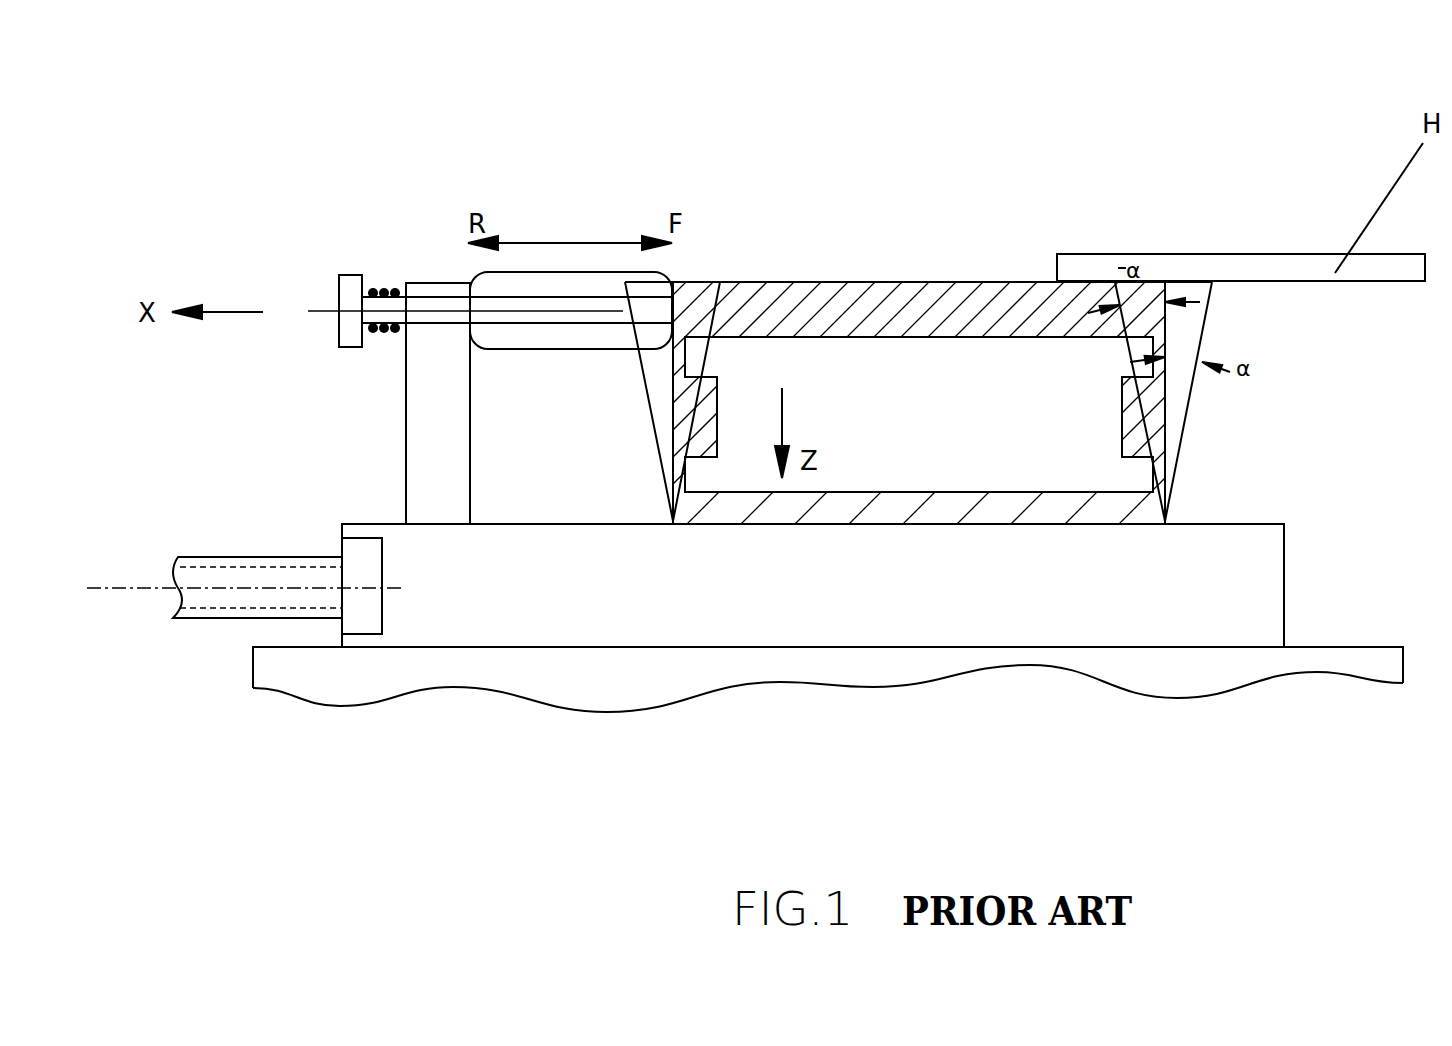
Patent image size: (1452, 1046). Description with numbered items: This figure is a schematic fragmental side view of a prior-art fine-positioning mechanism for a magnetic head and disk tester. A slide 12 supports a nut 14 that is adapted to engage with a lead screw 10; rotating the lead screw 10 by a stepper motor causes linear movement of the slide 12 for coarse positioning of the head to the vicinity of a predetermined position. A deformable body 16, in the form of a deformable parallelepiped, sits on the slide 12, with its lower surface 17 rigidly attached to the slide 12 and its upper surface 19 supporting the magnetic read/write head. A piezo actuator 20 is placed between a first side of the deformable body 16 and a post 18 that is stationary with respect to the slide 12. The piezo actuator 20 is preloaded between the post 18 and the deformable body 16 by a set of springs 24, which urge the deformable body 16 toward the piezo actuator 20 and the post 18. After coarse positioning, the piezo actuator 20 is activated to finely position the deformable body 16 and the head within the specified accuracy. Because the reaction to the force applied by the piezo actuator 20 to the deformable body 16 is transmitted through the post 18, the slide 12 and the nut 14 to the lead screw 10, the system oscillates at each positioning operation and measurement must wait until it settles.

The lead screw 10 is at (210, 615).
The slide 12 is at (683, 597).
The nut 14 is at (358, 540).
The deformable body 16 is at (965, 268).
The lower surface 17 is at (883, 492).
The post 18 is at (418, 290).
The upper surface 19 is at (865, 308).
The piezo actuator 20 is at (558, 305).
The set of springs 24 is at (383, 290).